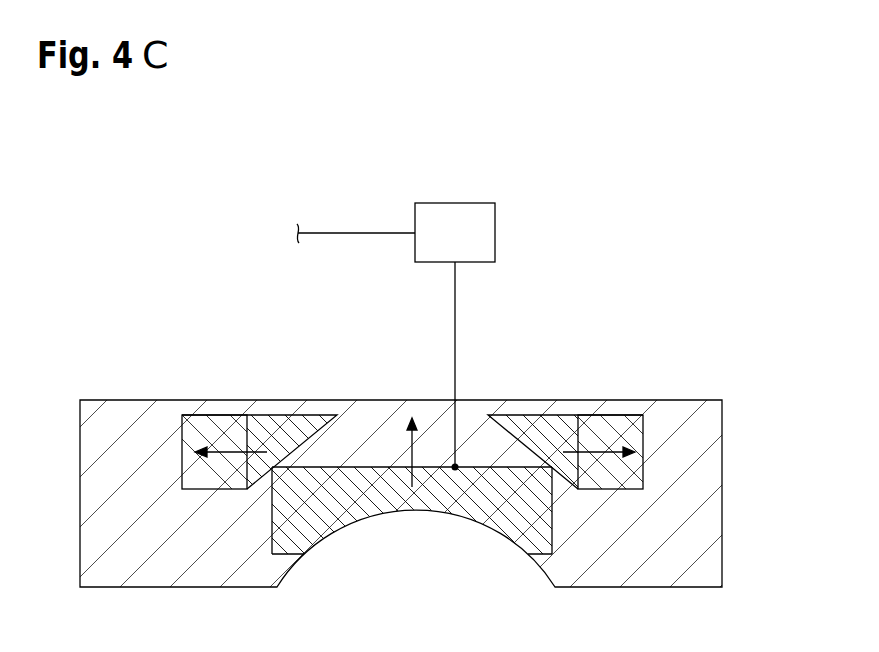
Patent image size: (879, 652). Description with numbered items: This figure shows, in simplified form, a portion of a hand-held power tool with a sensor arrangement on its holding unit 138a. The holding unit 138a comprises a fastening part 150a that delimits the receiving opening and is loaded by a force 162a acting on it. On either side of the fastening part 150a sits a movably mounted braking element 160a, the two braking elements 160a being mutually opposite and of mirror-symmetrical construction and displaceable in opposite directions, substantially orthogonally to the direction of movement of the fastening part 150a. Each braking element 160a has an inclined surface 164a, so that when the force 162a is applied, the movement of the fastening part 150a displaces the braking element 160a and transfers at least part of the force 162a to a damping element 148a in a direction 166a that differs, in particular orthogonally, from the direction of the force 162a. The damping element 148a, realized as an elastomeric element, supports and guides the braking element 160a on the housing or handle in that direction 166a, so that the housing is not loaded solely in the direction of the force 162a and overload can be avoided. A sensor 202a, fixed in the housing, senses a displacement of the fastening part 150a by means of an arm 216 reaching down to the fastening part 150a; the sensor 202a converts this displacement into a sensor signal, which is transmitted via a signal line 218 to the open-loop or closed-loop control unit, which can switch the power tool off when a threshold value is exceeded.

The holding unit 138a is at (677, 250).
The sensor 202a is at (440, 217).
The signal line 218 is at (352, 233).
The arm 216 is at (455, 298).
The damping element 148a is at (196, 429).
The direction 166a is at (227, 446).
The braking element 160a is at (279, 433).
The force 162a is at (408, 452).
The fastening part 150a is at (388, 493).
The inclined surface 164a is at (312, 448).